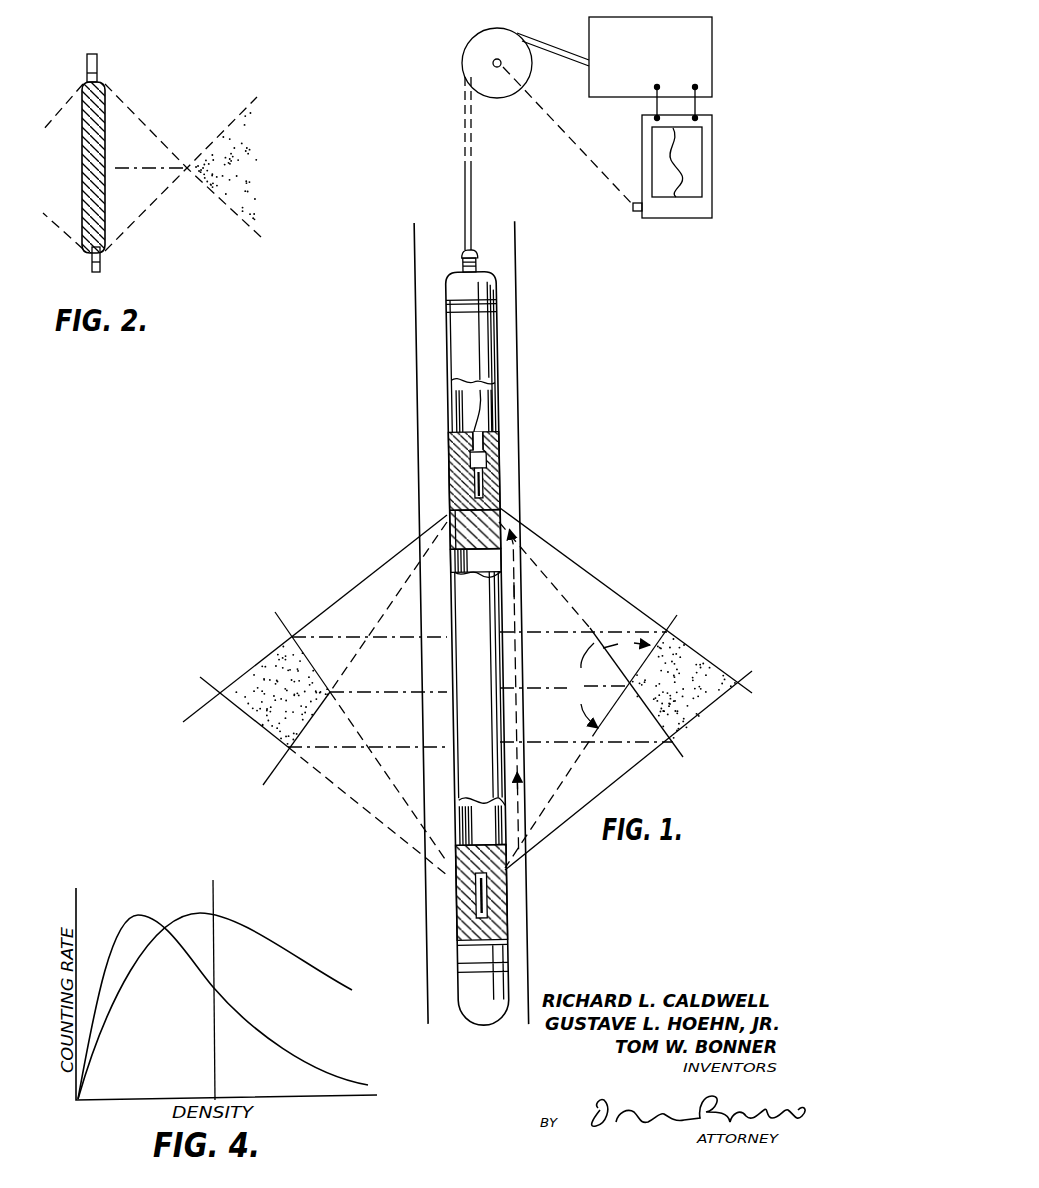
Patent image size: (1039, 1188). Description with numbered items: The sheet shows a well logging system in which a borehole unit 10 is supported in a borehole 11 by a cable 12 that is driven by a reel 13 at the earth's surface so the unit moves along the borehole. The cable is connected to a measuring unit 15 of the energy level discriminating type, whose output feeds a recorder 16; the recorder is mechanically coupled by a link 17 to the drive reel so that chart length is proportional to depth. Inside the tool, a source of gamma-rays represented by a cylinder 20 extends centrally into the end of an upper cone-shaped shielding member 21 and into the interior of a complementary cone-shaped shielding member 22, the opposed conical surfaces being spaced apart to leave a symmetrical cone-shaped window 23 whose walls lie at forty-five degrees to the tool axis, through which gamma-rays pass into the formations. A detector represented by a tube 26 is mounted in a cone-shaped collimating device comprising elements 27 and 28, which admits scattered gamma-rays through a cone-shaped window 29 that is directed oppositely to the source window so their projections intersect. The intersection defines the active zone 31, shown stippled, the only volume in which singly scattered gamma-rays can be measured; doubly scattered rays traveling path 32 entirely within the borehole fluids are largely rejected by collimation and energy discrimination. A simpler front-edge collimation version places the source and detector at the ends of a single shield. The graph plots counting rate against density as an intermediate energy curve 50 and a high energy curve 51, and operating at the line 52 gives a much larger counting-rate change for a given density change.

In FIG. 1, the borehole unit 10 is at (482, 379).
In FIG. 1, the borehole 11 is at (516, 322).
In FIG. 1, the cable 12 is at (472, 188).
In FIG. 1, the reel 13 is at (467, 55).
In FIG. 1, the measuring unit 15 is at (665, 62).
In FIG. 1, the recorder 16 is at (708, 202).
In FIG. 1, the link 17 is at (613, 182).
In FIG. 1, the source of gamma-rays 20 is at (477, 907).
In FIG. 2, the source of gamma-rays 20 is at (100, 268).
In FIG. 1, the upper cone-shaped shielding member 21 is at (480, 709).
In FIG. 1, the cone-shaped shielding member 22 is at (497, 928).
In FIG. 1, the cone-shaped window 23 is at (494, 878).
In FIG. 1, the detector 26 is at (466, 487).
In FIG. 2, the detector 26 is at (97, 75).
In FIG. 1, the collimating element 27 is at (475, 563).
In FIG. 1, the collimating element 28 is at (491, 456).
In FIG. 1, the cone-shaped window 29 is at (443, 513).
In FIG. 1, the active zone 31 is at (290, 701).
In FIG. 2, the active zone 31 is at (230, 207).
In FIG. 1, the path 32 is at (506, 658).
In FIG. 4, the intermediate energy curve 50 is at (318, 1074).
In FIG. 4, the high energy curve 51 is at (300, 972).
In FIG. 4, the line 52 is at (213, 1071).